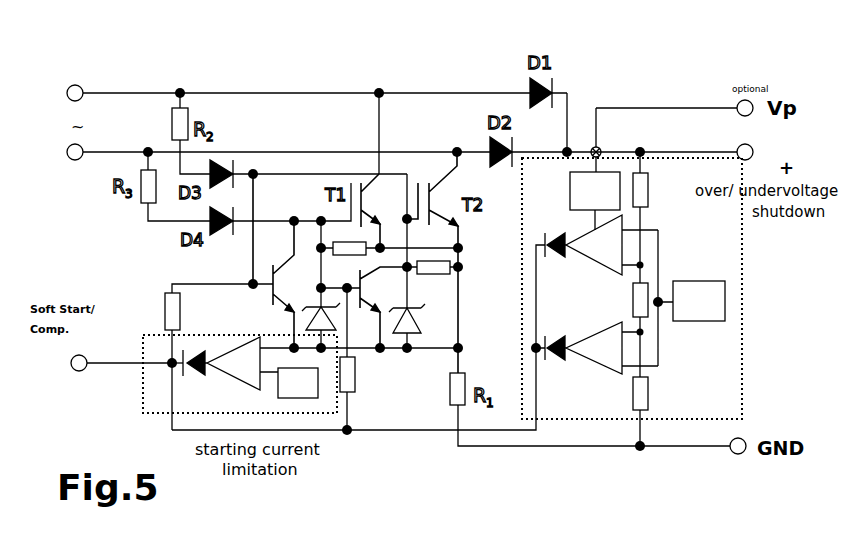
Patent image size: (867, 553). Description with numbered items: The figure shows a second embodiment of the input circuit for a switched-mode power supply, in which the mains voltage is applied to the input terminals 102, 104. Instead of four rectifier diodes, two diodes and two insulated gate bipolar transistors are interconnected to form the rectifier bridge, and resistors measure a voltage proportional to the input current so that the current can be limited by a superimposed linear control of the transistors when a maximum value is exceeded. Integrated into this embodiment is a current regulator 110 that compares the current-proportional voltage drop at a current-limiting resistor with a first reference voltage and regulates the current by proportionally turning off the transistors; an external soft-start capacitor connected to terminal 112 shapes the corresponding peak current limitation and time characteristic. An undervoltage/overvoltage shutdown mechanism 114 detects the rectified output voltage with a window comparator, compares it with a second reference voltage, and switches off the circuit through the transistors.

The input terminal 102 is at (75, 85).
The input terminal 104 is at (75, 160).
The current regulator 110 is at (143, 400).
The terminal 112 is at (79, 372).
The undervoltage/overvoltage shutdown mechanism 114 is at (742, 268).